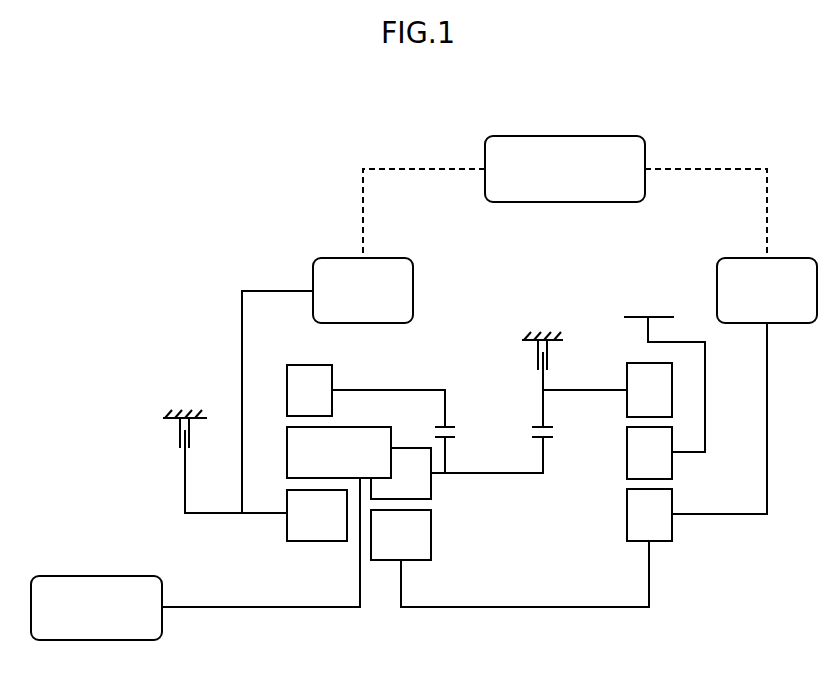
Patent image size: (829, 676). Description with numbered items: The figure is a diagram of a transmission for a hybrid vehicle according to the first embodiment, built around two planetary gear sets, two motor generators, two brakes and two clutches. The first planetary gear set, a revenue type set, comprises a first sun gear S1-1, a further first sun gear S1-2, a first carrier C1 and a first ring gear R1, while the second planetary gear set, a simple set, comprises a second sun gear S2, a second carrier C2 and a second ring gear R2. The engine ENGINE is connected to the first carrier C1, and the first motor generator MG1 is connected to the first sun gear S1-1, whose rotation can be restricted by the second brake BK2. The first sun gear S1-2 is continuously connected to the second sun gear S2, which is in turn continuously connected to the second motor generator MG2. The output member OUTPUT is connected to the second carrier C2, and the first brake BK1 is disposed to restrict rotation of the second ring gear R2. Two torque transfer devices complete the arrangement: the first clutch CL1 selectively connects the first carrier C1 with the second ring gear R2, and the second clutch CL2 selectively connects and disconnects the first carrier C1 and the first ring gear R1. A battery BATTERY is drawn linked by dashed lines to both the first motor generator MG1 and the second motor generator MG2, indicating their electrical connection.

The battery BATTERY is at (565, 197).
The first motor generator MG1 is at (327, 385).
The second motor generator MG2 is at (744, 386).
The output member OUTPUT is at (654, 369).
The first brake BK1 is at (542, 361).
The second brake BK2 is at (225, 444).
The first ring gear R1 is at (366, 396).
The first carrier C1 is at (359, 463).
The first sun gear S1-1 is at (317, 515).
The first sun gear S1-2 is at (510, 558).
The second ring gear R2 is at (607, 390).
The second carrier C2 is at (649, 453).
The second sun gear S2 is at (649, 515).
The first clutch CL1 is at (514, 445).
The second clutch CL2 is at (467, 445).
The engine ENGINE is at (195, 559).